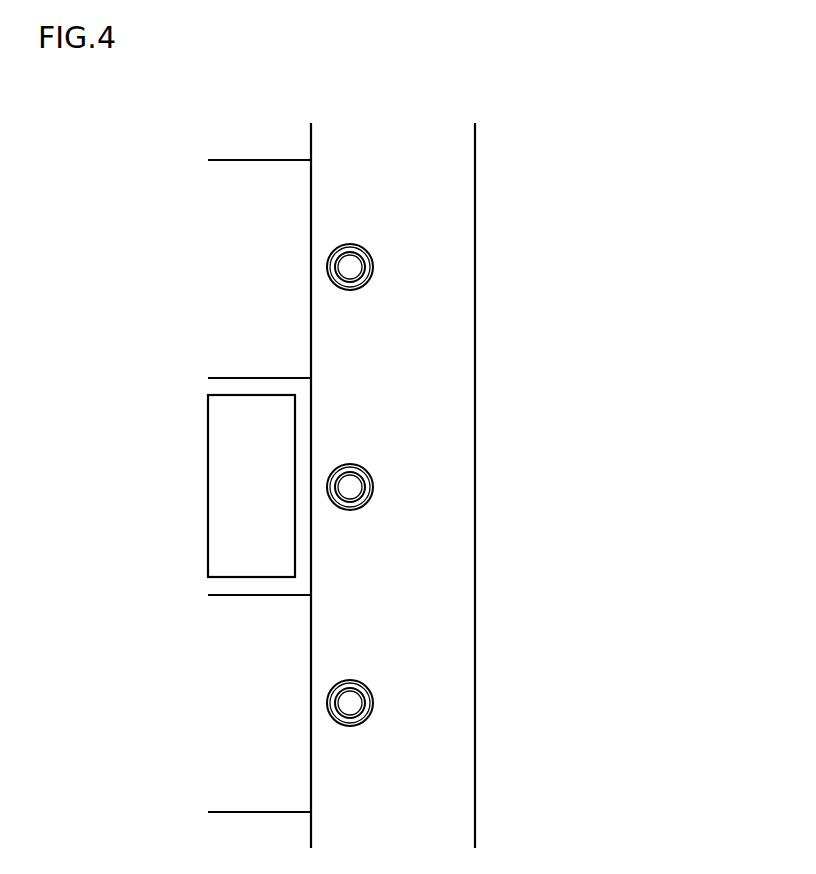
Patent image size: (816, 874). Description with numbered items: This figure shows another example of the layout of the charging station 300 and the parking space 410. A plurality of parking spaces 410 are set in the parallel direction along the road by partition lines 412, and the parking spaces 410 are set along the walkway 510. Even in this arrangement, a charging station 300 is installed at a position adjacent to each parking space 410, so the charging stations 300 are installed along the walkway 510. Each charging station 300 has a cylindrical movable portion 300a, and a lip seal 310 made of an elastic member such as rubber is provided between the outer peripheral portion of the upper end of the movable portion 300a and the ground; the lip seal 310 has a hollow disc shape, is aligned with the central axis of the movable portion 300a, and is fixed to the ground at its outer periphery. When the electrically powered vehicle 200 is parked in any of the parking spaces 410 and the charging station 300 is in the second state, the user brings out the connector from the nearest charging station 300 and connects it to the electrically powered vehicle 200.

The walkway 510 is at (337, 140).
The parking space 410 is at (215, 197).
The partition line 412 is at (258, 375).
The electrically powered vehicle 200 is at (207, 487).
The charging station 300 is at (376, 266).
The lip seal 310 is at (366, 250).
The movable portion 300a is at (358, 284).